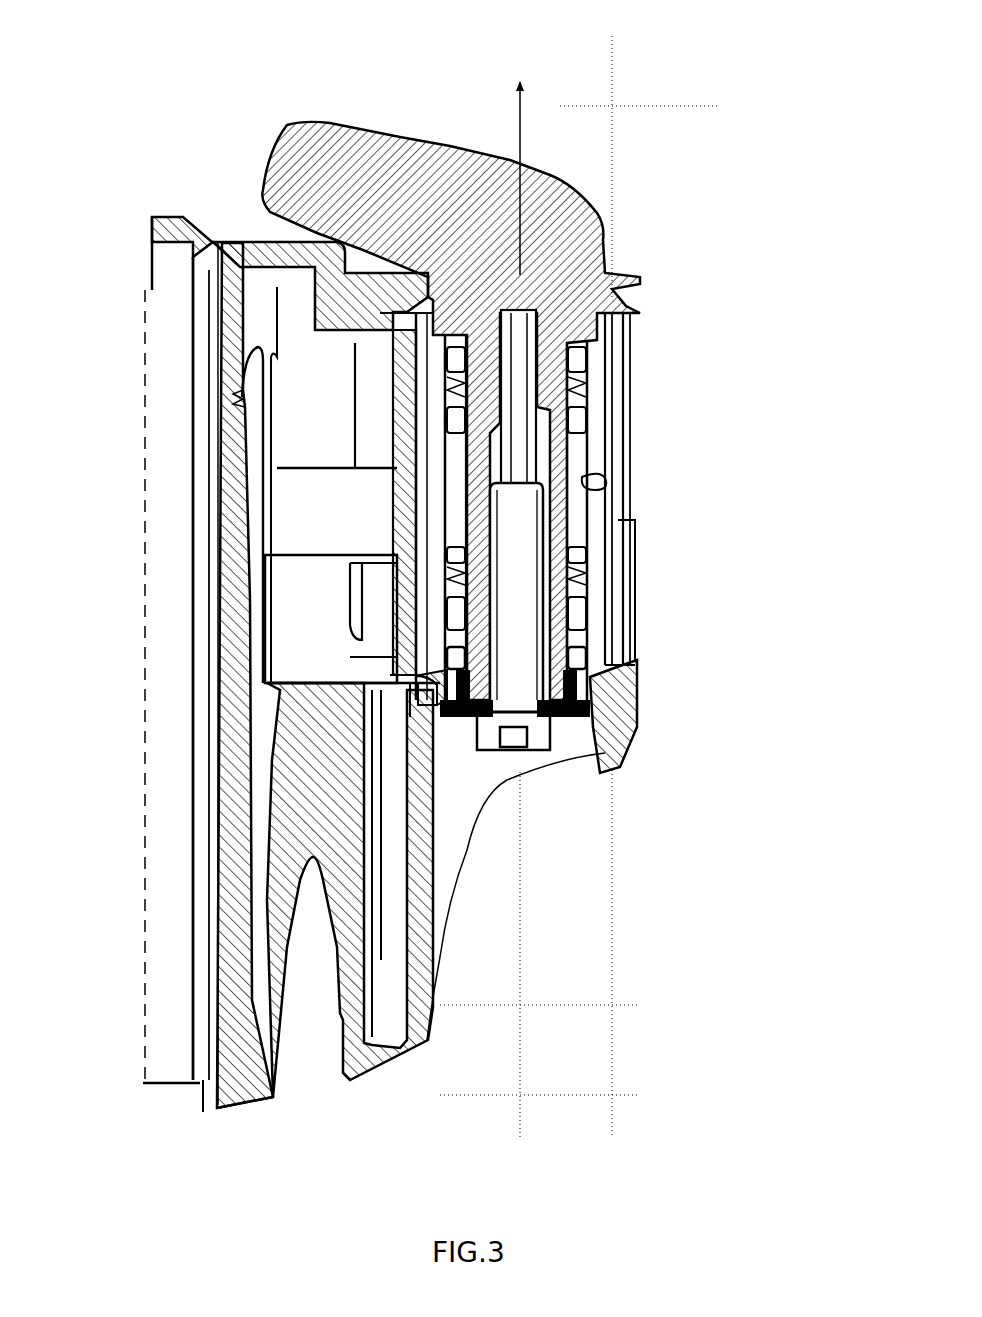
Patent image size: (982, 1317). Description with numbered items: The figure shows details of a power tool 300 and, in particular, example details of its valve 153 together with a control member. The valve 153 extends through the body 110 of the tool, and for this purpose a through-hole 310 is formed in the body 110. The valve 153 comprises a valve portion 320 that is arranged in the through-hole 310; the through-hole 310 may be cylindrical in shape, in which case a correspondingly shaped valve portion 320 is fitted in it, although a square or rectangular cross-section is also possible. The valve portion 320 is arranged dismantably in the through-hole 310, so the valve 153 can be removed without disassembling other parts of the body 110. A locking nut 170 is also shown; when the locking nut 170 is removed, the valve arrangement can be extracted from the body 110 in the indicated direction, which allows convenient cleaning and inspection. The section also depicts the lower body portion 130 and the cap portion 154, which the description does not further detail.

The power tool 300 is at (104, 67).
The body 110 is at (277, 262).
The lower body 130 is at (441, 1024).
The valve 153 is at (702, 649).
The cap 154 is at (577, 195).
The locking nut 170 is at (520, 733).
The through-hole 310 is at (615, 377).
The valve portion 320 is at (537, 462).